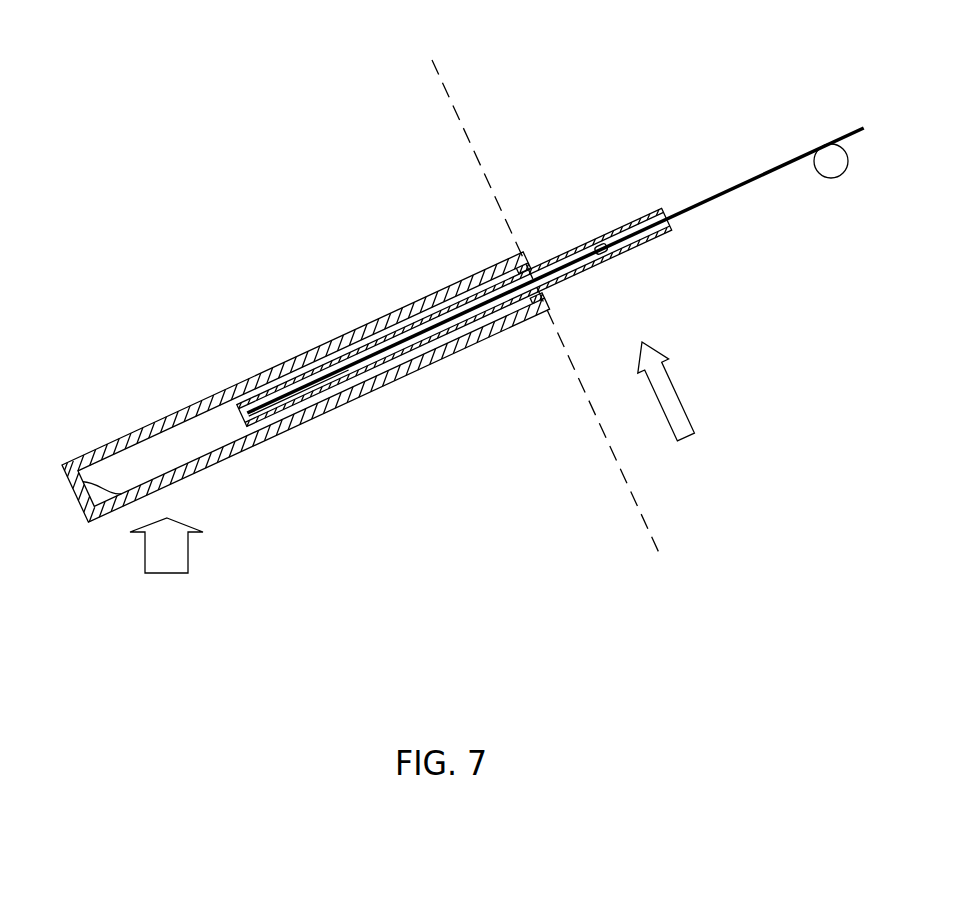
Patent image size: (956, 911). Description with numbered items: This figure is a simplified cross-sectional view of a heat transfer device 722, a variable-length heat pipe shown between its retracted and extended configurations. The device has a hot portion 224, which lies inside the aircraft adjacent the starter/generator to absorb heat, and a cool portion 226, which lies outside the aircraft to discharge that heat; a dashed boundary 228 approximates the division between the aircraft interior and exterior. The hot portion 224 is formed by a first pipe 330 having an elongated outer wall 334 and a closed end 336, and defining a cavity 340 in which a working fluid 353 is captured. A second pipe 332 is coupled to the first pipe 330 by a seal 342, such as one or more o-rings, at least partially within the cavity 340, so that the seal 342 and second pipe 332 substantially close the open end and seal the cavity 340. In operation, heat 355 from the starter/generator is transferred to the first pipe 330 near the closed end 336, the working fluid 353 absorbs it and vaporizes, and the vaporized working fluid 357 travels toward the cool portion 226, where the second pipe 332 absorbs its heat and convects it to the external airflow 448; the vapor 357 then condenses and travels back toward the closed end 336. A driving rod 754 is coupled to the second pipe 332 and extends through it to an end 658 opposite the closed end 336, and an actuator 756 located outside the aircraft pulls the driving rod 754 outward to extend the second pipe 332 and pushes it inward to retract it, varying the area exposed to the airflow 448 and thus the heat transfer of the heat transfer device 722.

The hot portion 224 is at (395, 478).
The cool portion 226 is at (628, 132).
The boundary 228 is at (445, 80).
The first pipe 330 is at (240, 380).
The second pipe 332 is at (638, 249).
The elongated outer wall 334 is at (135, 440).
The closed end 336 is at (78, 502).
The cavity 340 is at (216, 445).
The seal 342 is at (533, 294).
The working fluid 353 is at (102, 500).
The heat 355 is at (180, 556).
The vaporized working fluid 357 is at (602, 245).
The airflow 448 is at (662, 407).
The end 658 is at (668, 217).
The heat transfer device 722 is at (290, 158).
The driving rod 754 is at (288, 398).
The actuator 756 is at (826, 178).